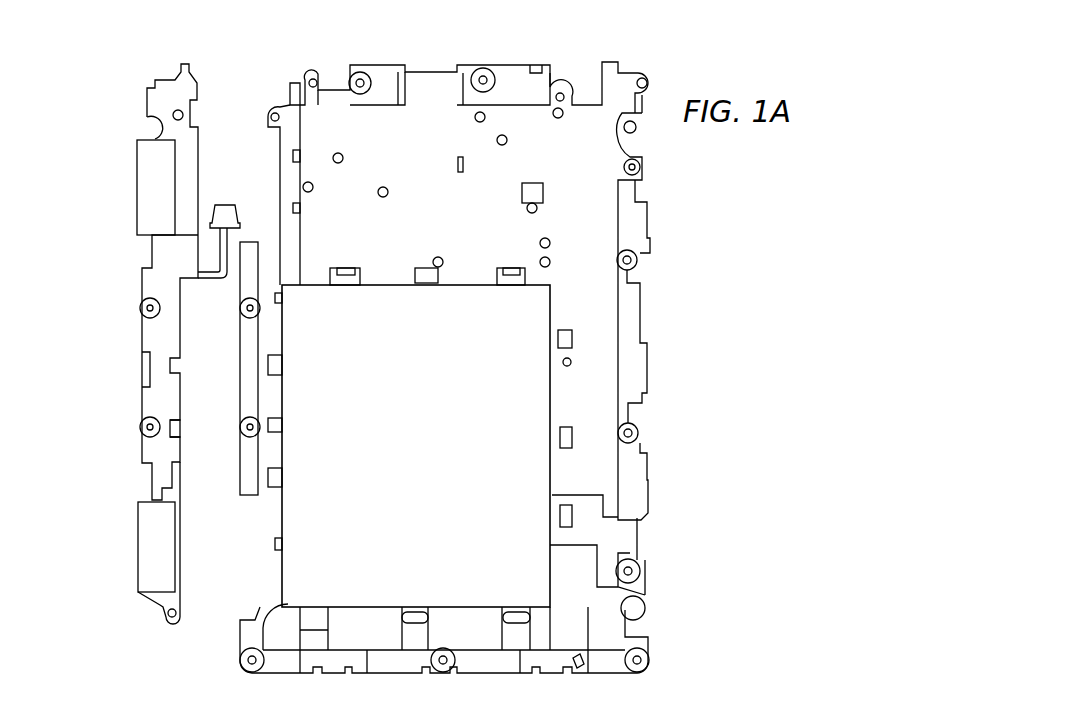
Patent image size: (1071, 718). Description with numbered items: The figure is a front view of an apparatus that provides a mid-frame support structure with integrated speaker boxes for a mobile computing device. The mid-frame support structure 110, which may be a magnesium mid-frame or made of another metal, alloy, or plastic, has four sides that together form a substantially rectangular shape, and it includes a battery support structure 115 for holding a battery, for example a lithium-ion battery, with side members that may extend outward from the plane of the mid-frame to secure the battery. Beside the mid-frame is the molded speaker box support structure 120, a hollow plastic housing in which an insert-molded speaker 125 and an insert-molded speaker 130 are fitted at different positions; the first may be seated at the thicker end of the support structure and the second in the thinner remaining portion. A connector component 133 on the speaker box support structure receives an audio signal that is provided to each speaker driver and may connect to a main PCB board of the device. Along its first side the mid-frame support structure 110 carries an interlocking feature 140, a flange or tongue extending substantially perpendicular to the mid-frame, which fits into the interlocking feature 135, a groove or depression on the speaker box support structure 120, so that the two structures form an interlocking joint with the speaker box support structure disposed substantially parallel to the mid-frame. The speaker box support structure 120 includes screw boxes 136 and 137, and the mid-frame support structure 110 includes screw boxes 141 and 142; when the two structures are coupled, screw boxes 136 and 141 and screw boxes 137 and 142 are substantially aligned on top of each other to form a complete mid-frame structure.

The mid-frame support structure 110 is at (640, 44).
The battery support structure 115 is at (522, 535).
The molded speaker box support structure 120 is at (207, 48).
The insert-molded speaker 125 is at (154, 198).
The insert-molded speaker 130 is at (155, 548).
The connector component 133 is at (225, 204).
The interlocking feature 135 is at (178, 417).
The screw box 136 is at (140, 308).
The screw box 137 is at (140, 427).
The interlocking feature 140 is at (281, 425).
The screw box 141 is at (241, 308).
The screw box 142 is at (241, 427).